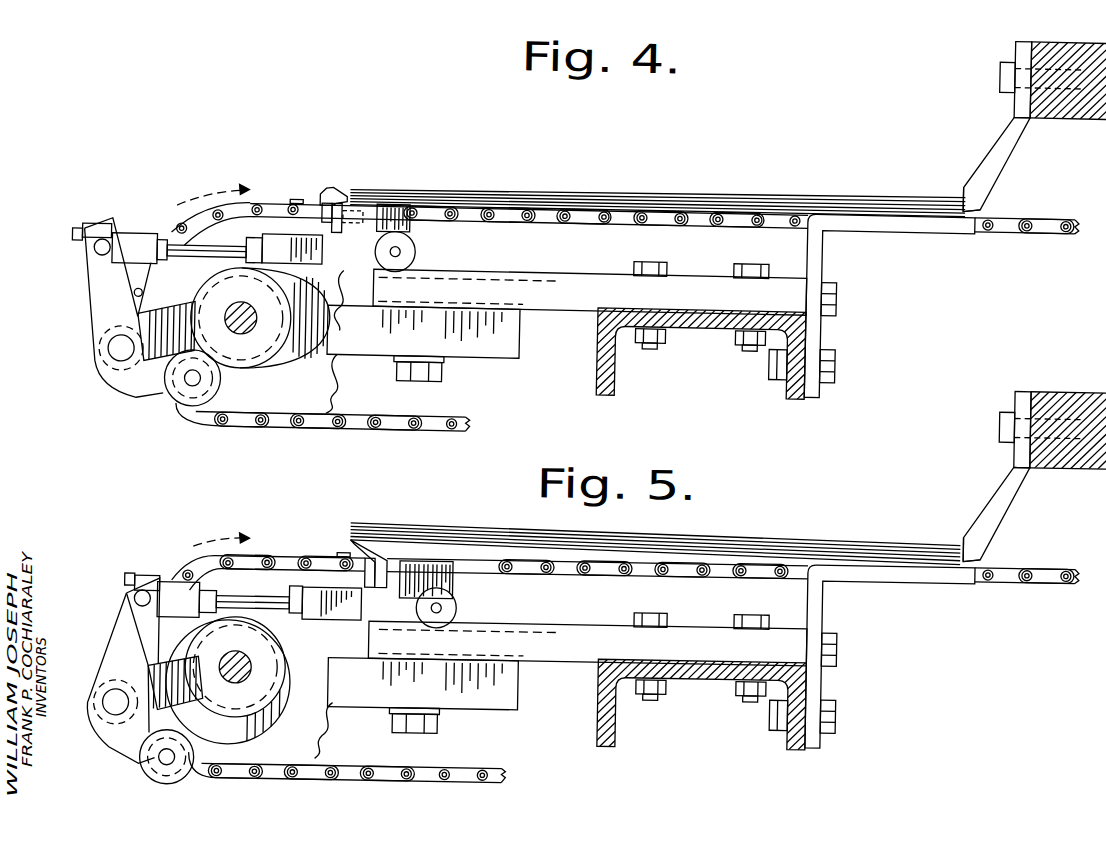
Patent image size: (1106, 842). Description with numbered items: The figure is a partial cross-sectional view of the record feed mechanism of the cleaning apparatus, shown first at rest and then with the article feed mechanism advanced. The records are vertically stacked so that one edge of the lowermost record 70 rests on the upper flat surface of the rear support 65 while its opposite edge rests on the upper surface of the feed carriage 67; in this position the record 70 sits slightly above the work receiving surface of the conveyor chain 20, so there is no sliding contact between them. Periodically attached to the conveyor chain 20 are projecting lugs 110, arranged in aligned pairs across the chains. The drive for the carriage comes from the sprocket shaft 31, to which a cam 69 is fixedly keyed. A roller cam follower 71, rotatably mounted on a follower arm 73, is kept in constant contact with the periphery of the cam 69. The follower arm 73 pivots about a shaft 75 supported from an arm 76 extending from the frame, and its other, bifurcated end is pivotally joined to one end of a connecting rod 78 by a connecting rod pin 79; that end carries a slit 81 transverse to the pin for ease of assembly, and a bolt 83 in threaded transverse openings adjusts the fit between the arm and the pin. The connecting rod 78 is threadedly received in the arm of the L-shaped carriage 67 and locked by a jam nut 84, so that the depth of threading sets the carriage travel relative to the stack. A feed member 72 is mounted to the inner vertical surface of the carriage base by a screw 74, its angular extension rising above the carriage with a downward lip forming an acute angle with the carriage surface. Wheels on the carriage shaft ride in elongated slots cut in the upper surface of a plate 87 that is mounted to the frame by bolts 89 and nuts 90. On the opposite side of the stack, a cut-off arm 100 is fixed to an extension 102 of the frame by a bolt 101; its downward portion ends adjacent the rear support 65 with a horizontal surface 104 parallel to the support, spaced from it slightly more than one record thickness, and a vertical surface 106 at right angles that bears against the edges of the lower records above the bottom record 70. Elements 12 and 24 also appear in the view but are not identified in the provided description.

In FIG. 4, the frame channel 12 is at (614, 384).
In FIG. 5, the frame channel 12 is at (698, 707).
In FIG. 4, the conveyor chain 20 is at (333, 428).
In FIG. 5, the conveyor chain 20 is at (633, 673).
In FIG. 4, the housing 24 is at (322, 398).
In FIG. 5, the housing 24 is at (417, 709).
In FIG. 4, the sprocket shaft 31 is at (258, 322).
In FIG. 5, the sprocket shaft 31 is at (224, 680).
In FIG. 4, the rear support 65 is at (942, 222).
In FIG. 5, the rear support 65 is at (890, 658).
In FIG. 4, the feed carriage 67 is at (408, 222).
In FIG. 5, the feed carriage 67 is at (448, 580).
In FIG. 4, the cam 69 is at (258, 430).
In FIG. 5, the cam 69 is at (115, 677).
In FIG. 4, the lowermost record 70 is at (797, 207).
In FIG. 5, the lowermost record 70 is at (613, 569).
In FIG. 4, the roller cam follower 71 is at (185, 400).
In FIG. 5, the roller cam follower 71 is at (147, 762).
In FIG. 4, the feed member 72 is at (350, 192).
In FIG. 5, the feed member 72 is at (640, 543).
In FIG. 4, the follower arm 73 is at (90, 310).
In FIG. 5, the follower arm 73 is at (260, 606).
In FIG. 4, the screw 74 is at (320, 196).
In FIG. 5, the screw 74 is at (354, 574).
In FIG. 4, the shaft 75 is at (416, 260).
In FIG. 5, the shaft 75 is at (293, 665).
In FIG. 4, the arm 76 is at (176, 318).
In FIG. 4, the connecting rod 78 is at (148, 238).
In FIG. 5, the connecting rod 78 is at (179, 574).
In FIG. 4, the connecting rod pin 79 is at (97, 260).
In FIG. 5, the connecting rod pin 79 is at (128, 576).
In FIG. 4, the slit 81 is at (401, 252).
In FIG. 5, the slit 81 is at (319, 574).
In FIG. 4, the bolt 83 is at (72, 240).
In FIG. 5, the bolt 83 is at (341, 615).
In FIG. 4, the jam nut 84 is at (248, 252).
In FIG. 5, the jam nut 84 is at (280, 616).
In FIG. 4, the plate 87 is at (575, 278).
In FIG. 5, the plate 87 is at (587, 627).
In FIG. 5, the bolts 89 is at (702, 608).
In FIG. 4, the nuts 90 is at (735, 330).
In FIG. 5, the nuts 90 is at (736, 681).
In FIG. 4, the cut-off arm 100 is at (1020, 130).
In FIG. 5, the cut-off arm 100 is at (1014, 477).
In FIG. 4, the bolt 101 is at (997, 64).
In FIG. 5, the bolt 101 is at (1010, 427).
In FIG. 4, the extension 102 is at (1100, 29).
In FIG. 5, the extension 102 is at (1030, 419).
In FIG. 4, the surface 104 is at (982, 197).
In FIG. 5, the surface 104 is at (999, 548).
In FIG. 4, the surface 106 is at (962, 188).
In FIG. 5, the surface 106 is at (945, 524).
In FIG. 4, the projecting lugs 110 is at (296, 202).
In FIG. 5, the projecting lugs 110 is at (318, 550).